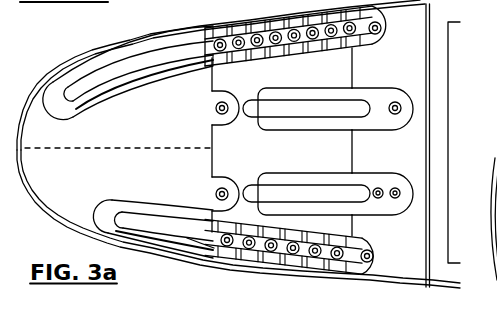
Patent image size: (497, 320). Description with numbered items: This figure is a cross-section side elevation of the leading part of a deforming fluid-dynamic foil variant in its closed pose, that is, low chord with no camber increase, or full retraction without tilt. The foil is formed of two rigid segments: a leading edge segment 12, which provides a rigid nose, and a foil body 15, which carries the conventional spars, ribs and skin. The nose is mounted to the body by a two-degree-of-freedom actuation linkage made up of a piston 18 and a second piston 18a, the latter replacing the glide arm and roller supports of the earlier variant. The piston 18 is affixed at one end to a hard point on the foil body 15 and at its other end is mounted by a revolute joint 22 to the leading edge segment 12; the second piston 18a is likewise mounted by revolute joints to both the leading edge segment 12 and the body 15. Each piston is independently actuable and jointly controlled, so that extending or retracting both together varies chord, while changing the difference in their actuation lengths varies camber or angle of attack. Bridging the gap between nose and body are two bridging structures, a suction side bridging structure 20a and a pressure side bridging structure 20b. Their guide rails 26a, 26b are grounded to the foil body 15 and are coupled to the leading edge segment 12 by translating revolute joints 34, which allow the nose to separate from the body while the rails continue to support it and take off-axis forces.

The leading edge segment 12 is at (157, 130).
The foil body 15 is at (420, 78).
The piston 18 is at (394, 176).
The second piston 18a is at (321, 121).
The suction side bridging structure 20a is at (227, 15).
The pressure side bridging structure 20b is at (237, 273).
The revolute joint 22 is at (216, 104).
The guide rail of the suction side bridging structure 26a is at (57, 100).
The guide rail of the pressure side bridging structure 26b is at (122, 201).
The translating revolute joint 34 is at (203, 248).